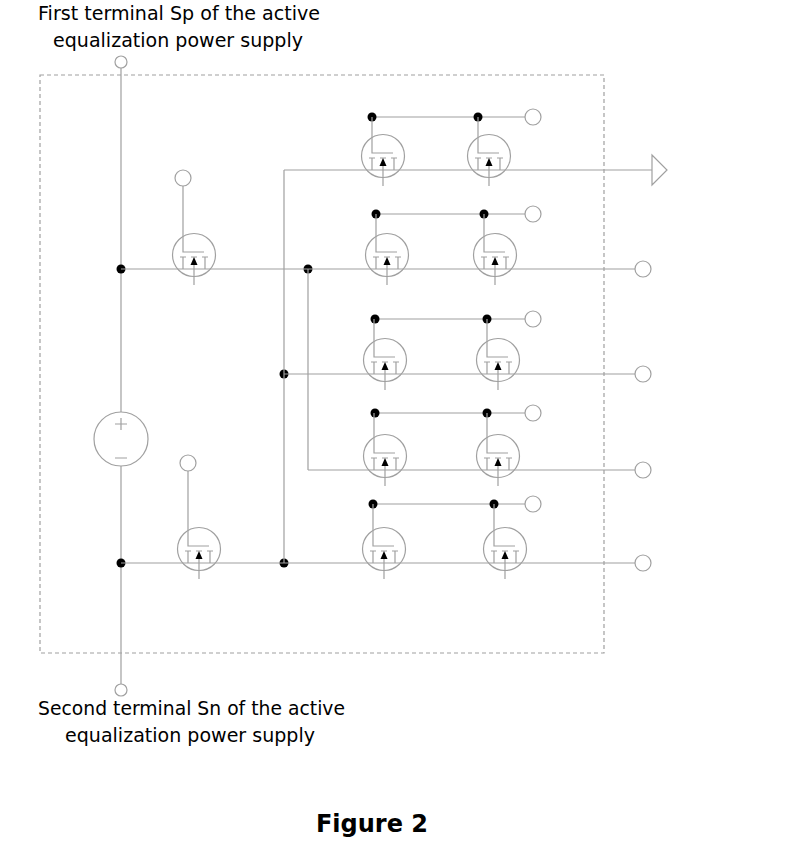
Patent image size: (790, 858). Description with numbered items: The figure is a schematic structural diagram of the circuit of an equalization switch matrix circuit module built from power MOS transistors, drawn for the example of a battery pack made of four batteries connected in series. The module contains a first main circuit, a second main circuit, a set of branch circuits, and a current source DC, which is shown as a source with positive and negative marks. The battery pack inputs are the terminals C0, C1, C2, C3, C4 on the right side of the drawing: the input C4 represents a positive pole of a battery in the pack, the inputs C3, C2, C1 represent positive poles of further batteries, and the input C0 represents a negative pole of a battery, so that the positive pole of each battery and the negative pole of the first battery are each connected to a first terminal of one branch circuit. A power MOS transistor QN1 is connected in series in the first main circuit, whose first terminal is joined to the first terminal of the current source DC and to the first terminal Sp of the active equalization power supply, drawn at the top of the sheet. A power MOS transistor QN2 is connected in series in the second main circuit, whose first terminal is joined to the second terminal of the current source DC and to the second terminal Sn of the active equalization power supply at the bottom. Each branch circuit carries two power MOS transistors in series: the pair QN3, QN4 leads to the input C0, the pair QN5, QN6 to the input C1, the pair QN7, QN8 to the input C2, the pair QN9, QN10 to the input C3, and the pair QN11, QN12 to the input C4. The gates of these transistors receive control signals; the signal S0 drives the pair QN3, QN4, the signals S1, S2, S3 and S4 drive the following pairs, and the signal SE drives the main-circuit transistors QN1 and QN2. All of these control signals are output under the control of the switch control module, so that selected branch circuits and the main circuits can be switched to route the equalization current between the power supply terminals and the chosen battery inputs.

The current source DC is at (102, 439).
The control signal SE is at (185, 306).
The power MOS transistor QN1 is at (214, 235).
The power MOS transistor QN2 is at (202, 525).
The power MOS transistor QN3 is at (410, 151).
The power MOS transistor QN4 is at (517, 151).
The power MOS transistor QN5 is at (415, 249).
The power MOS transistor QN6 is at (523, 249).
The power MOS transistor QN7 is at (413, 354).
The power MOS transistor QN8 is at (526, 354).
The power MOS transistor QN9 is at (413, 449).
The power MOS transistor QN10 is at (532, 449).
The power MOS transistor QN11 is at (418, 541).
The power MOS transistor QN12 is at (539, 541).
The control signal S0 is at (473, 117).
The control signal S1 is at (475, 213).
The control signal S2 is at (474, 318).
The control signal S3 is at (474, 412).
The control signal S4 is at (473, 503).
The battery pack input C0 is at (492, 170).
The battery pack input C1 is at (496, 269).
The battery pack input C2 is at (484, 374).
The battery pack input C3 is at (496, 470).
The battery pack input C4 is at (484, 563).